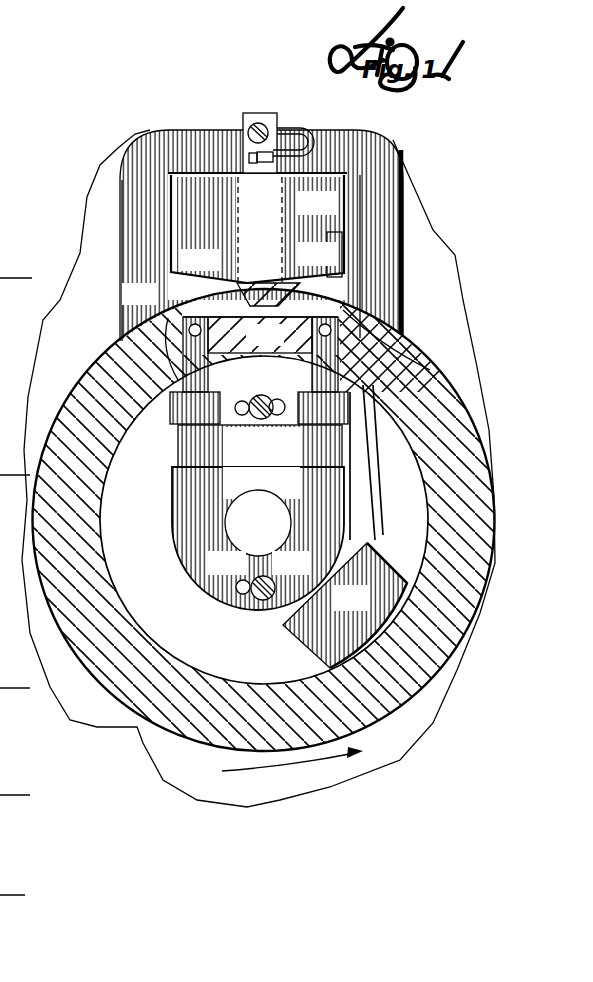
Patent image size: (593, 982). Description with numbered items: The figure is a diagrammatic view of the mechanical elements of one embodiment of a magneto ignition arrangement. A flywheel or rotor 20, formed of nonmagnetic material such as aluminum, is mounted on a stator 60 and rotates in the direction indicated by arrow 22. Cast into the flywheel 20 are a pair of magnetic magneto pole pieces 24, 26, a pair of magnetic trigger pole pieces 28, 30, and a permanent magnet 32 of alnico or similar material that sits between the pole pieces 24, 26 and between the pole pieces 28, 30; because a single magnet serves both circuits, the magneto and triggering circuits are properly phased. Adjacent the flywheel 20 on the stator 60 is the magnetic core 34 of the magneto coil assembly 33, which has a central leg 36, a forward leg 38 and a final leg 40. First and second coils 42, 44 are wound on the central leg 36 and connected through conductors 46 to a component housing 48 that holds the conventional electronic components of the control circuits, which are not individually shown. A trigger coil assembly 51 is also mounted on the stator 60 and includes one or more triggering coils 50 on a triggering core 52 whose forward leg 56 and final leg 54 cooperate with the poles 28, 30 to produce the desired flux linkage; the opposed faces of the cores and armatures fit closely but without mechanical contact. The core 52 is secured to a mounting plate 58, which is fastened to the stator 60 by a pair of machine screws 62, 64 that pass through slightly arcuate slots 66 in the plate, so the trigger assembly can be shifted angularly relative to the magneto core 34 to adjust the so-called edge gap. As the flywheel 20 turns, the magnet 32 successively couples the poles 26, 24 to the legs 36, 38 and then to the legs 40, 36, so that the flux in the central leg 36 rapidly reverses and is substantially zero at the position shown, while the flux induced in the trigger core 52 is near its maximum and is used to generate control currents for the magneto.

The flywheel 20 is at (187, 737).
The arrow 22 is at (280, 777).
The magneto pole piece 24 is at (350, 305).
The magneto pole piece 26 is at (163, 330).
The trigger pole piece 28 is at (352, 317).
The trigger pole piece 30 is at (177, 382).
The permanent magnet 32 is at (250, 350).
The magneto coil assembly 33 is at (188, 186).
The magnetic core 34 is at (208, 143).
The central leg 36 is at (243, 277).
The forward leg 38 is at (385, 222).
The final leg 40 is at (137, 237).
The first coil 42 is at (300, 215).
The second coil 44 is at (303, 265).
The conductors 46 is at (385, 510).
The component housing 48 is at (337, 610).
The triggering coil 50 is at (403, 350).
The trigger coil assembly 51 is at (207, 505).
The triggering core 52 is at (275, 459).
The final leg 54 is at (185, 384).
The forward leg 56 is at (403, 318).
The mounting plate 58 is at (190, 488).
The stator 60 is at (165, 612).
The machine screw 62 is at (265, 400).
The machine screw 64 is at (267, 578).
The slots 66 is at (240, 403).